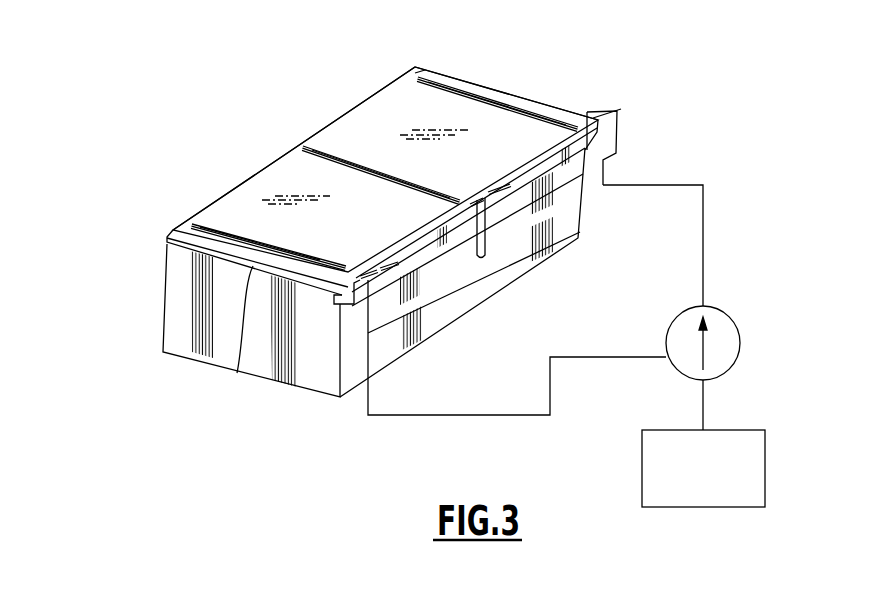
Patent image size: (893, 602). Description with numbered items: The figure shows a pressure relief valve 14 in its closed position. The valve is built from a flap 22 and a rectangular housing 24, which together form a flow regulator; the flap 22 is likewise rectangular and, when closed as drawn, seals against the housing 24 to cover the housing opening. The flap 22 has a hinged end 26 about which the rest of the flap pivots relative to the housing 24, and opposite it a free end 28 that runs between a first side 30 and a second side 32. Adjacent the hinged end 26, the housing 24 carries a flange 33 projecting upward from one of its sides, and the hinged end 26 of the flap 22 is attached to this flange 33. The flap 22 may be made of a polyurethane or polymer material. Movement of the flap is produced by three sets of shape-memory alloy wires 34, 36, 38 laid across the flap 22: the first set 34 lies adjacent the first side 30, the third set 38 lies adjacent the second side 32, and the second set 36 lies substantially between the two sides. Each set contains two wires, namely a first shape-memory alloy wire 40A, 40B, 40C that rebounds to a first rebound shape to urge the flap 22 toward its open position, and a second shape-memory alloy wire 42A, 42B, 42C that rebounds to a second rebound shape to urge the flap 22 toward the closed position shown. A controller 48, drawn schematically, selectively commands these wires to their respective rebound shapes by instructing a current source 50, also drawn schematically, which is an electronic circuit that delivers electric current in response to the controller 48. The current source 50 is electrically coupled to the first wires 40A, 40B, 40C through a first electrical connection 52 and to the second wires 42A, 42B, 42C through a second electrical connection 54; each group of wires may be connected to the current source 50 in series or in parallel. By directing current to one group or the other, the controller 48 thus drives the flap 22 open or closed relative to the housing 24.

The pressure relief valve 14 is at (124, 129).
The flap 22 is at (267, 183).
The housing 24 is at (188, 313).
The hinged end 26 is at (586, 102).
The free end 28 is at (333, 118).
The first side 30 is at (237, 373).
The second side 32 is at (500, 90).
The flange 33 is at (420, 253).
The first set of SMA wires 34 is at (184, 214).
The second set of SMA wires 36 is at (296, 136).
The third set of SMA wires 38 is at (409, 65).
The first shape-memory alloy wire 40A is at (177, 247).
The first shape-memory alloy wire 40B is at (410, 187).
The first shape-memory alloy wire 40C is at (438, 84).
The second shape-memory alloy wire 42A is at (217, 222).
The second shape-memory alloy wire 42B is at (403, 186).
The second shape-memory alloy wire 42C is at (453, 83).
The controller 48 is at (722, 481).
The current source 50 is at (726, 314).
The first electrical connection 52 is at (369, 397).
The second electrical connection 54 is at (705, 237).